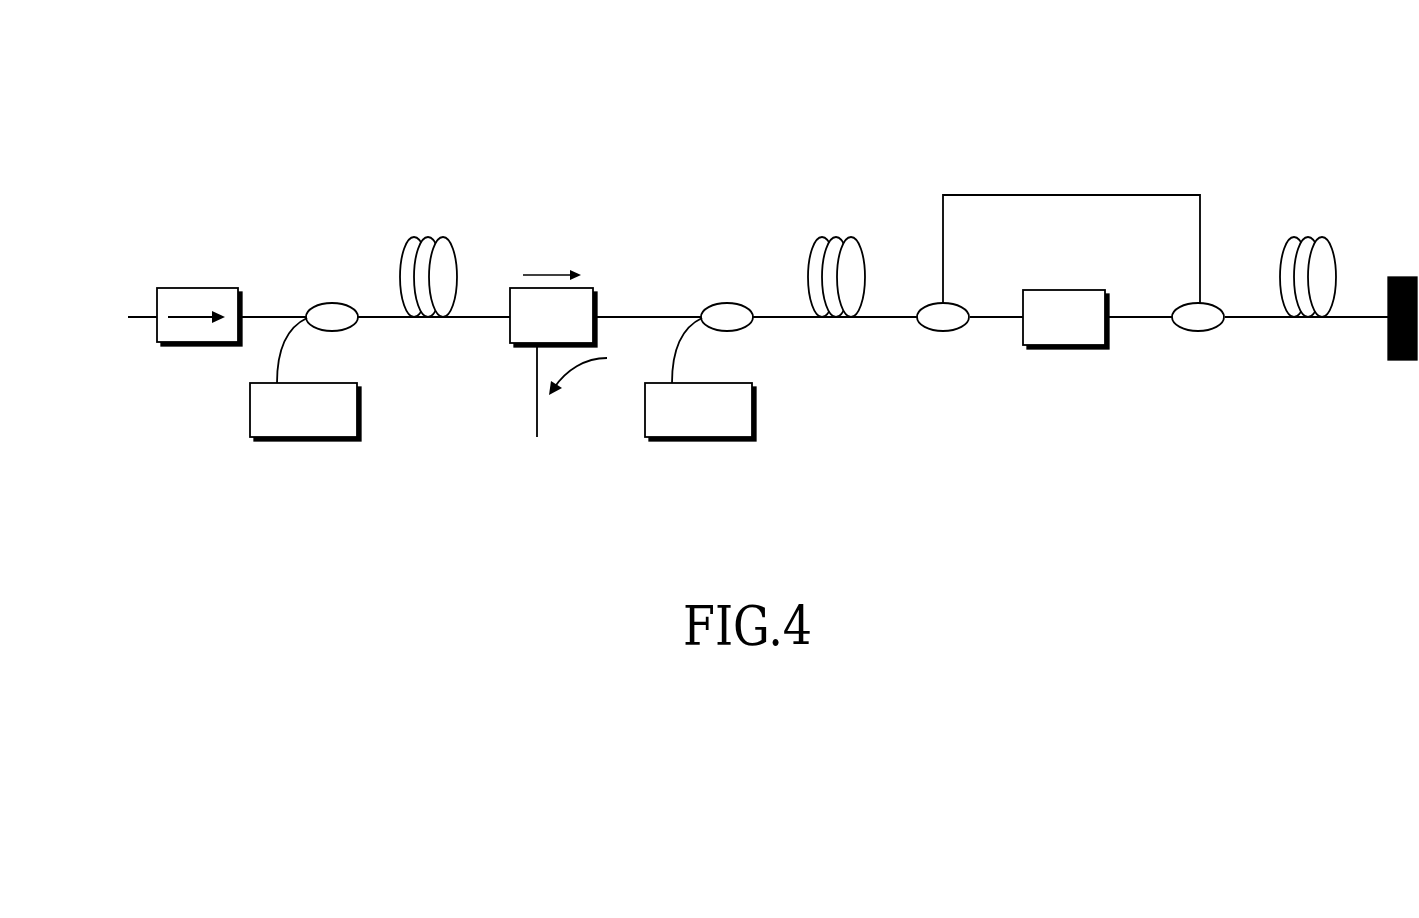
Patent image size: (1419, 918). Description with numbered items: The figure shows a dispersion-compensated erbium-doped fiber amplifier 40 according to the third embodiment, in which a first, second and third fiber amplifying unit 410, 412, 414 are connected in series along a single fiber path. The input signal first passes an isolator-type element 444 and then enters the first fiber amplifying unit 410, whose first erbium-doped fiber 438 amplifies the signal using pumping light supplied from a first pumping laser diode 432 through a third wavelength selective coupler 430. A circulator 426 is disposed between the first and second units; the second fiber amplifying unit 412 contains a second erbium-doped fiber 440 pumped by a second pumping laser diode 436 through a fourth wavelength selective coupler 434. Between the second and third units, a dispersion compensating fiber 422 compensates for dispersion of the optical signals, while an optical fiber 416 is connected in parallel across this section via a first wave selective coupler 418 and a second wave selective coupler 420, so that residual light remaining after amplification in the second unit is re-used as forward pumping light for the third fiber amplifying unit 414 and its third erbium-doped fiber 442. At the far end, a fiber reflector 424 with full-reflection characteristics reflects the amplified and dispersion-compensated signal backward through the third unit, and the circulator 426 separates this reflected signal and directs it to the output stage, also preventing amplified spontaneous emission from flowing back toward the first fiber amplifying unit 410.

The dispersion-compensated erbium-doped fiber amplifier 40 is at (863, 113).
The first fiber amplifying unit 410 is at (398, 229).
The second fiber amplifying unit 412 is at (805, 231).
The third fiber amplifying unit 414 is at (1278, 232).
The optical fiber 416 is at (1147, 195).
The first wave selective coupler 418 is at (930, 333).
The second wave selective coupler 420 is at (1178, 305).
The dispersion compensating fiber 422 is at (1035, 350).
The fiber reflector 424 is at (1387, 350).
The circulator 426 is at (520, 347).
The third wavelength selective coupler 430 is at (305, 312).
The first pumping laser diode 432 is at (300, 440).
The fourth wavelength selective coupler 434 is at (700, 312).
The second pumping laser diode 436 is at (697, 440).
The first erbium-doped fiber (EDF1) 438 is at (452, 239).
The second erbium-doped fiber (EDF2) 440 is at (860, 239).
The third erbium-doped fiber (EDF3) 442 is at (1331, 239).
The isolator 444 is at (190, 345).